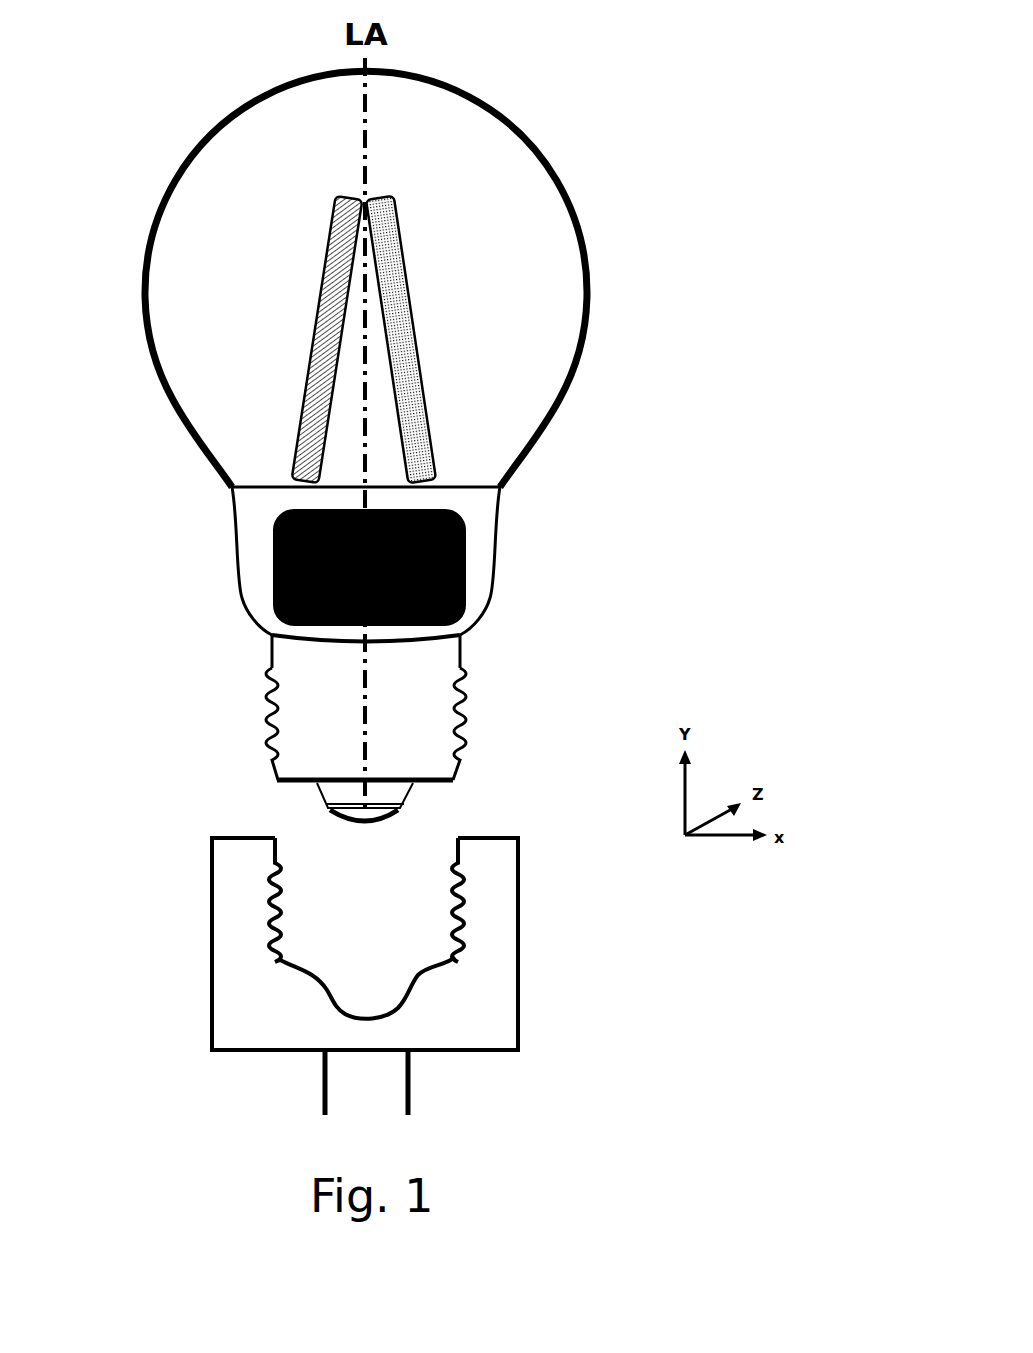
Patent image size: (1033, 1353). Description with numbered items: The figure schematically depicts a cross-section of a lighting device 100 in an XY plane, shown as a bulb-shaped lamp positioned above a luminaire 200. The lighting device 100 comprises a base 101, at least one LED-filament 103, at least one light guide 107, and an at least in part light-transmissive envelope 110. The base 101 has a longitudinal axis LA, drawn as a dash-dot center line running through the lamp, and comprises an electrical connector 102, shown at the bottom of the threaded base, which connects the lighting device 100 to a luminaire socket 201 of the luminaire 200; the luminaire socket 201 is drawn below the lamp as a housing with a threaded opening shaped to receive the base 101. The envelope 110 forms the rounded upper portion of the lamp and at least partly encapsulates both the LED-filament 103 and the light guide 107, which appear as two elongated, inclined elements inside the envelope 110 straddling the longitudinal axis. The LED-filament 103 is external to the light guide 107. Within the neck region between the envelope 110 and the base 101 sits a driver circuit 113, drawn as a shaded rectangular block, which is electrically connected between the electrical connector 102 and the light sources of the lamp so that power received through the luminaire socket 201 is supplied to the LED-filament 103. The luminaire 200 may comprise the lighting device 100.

The lighting device 100 is at (442, 446).
The base 101 is at (482, 684).
The electrical connector 102 is at (392, 818).
The LED-filament 103 is at (438, 285).
The light guide 107 is at (279, 311).
The light-transmissive envelope 110 is at (568, 418).
The driver circuit 113 is at (445, 585).
The luminaire 200 is at (465, 976).
The luminaire socket 201 is at (510, 997).